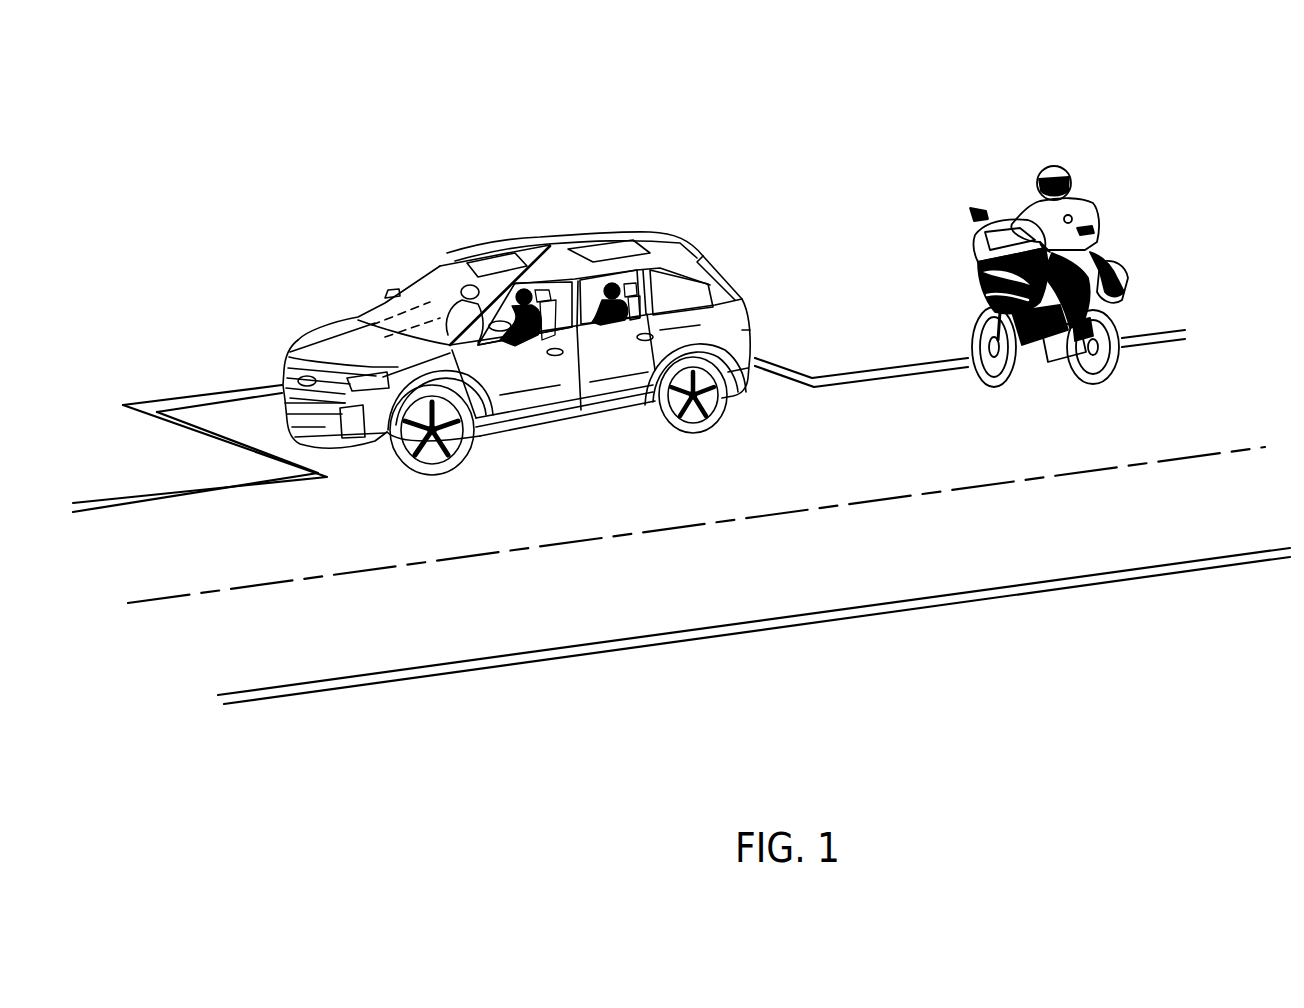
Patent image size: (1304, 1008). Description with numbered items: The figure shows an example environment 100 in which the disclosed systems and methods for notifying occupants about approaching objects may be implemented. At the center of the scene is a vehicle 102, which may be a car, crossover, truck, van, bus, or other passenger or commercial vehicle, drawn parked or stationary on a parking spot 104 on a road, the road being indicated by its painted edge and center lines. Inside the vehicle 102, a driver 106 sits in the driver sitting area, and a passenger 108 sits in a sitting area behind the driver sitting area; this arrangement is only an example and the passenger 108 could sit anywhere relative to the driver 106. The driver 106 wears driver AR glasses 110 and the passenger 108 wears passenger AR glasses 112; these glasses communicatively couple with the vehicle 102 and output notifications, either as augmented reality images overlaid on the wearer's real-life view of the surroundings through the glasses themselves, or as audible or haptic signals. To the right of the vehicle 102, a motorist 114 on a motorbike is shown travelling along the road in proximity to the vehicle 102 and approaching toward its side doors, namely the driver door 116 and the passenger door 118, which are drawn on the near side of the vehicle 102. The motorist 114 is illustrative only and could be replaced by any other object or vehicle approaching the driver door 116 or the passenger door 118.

The environment 100 is at (290, 116).
The vehicle 102 is at (527, 243).
The parking spot 104 is at (795, 397).
The driver 106 is at (520, 340).
The passenger 108 is at (677, 348).
The driver AR glasses 110 is at (522, 290).
The passenger AR glasses 112 is at (609, 284).
The motorist 114 is at (1047, 163).
The driver door 116 is at (533, 388).
The passenger door 118 is at (623, 368).